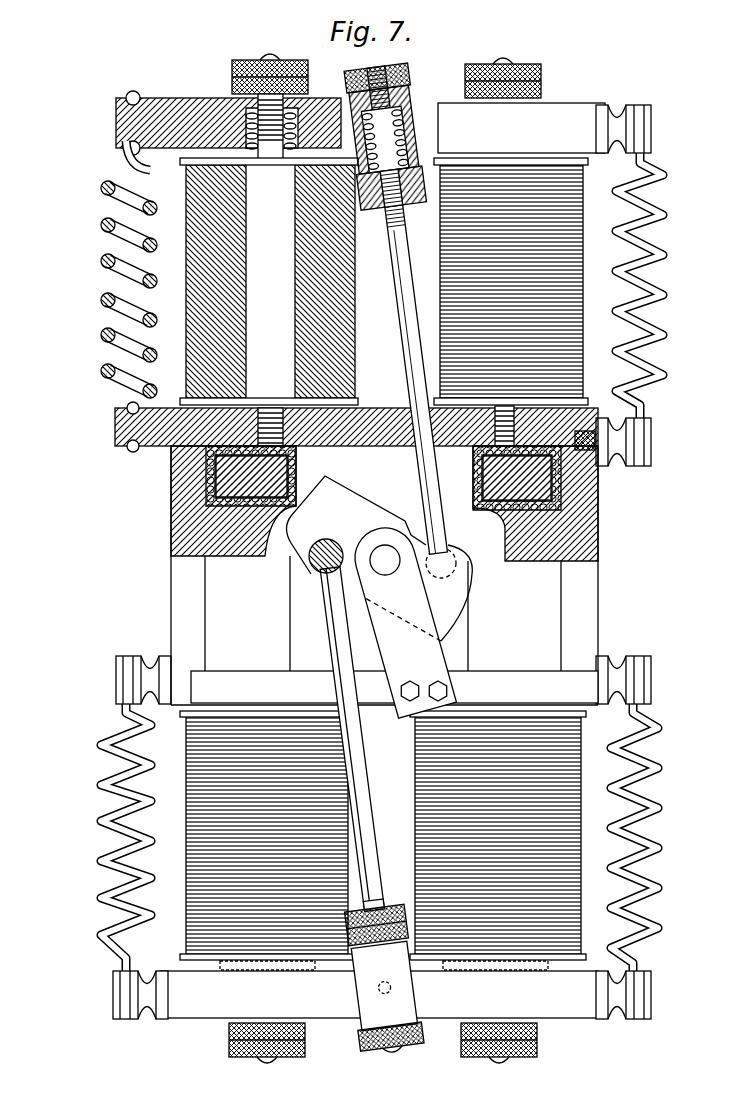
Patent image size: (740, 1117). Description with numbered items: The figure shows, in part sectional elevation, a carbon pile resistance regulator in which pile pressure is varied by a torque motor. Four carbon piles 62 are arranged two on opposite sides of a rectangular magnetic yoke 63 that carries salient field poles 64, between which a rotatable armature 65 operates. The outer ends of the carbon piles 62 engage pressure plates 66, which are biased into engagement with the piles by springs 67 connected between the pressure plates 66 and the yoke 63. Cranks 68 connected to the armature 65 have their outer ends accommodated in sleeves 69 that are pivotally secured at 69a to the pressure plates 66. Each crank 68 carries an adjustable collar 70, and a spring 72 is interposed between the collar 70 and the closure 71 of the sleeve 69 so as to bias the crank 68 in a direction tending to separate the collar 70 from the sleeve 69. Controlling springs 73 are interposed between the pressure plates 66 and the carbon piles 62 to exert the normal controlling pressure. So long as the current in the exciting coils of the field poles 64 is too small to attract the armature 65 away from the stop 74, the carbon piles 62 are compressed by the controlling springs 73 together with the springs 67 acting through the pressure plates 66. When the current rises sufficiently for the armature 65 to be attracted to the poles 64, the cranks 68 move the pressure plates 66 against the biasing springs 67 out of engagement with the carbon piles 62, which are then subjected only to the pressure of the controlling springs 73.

The carbon piles 62 is at (573, 276).
The rectangular magnetic yoke 63 is at (165, 512).
The salient field poles 64 is at (229, 545).
The rotatable armature 65 is at (357, 500).
The pressure plates 66 is at (560, 104).
The springs 67 is at (96, 325).
The cranks 68 is at (396, 360).
The sleeves 69 is at (398, 130).
The pivot 69a is at (387, 983).
The adjustable collar 70 is at (406, 196).
The closure 71 is at (396, 66).
The spring 72 is at (398, 102).
The springs 73 is at (240, 118).
The stop 74 is at (395, 625).